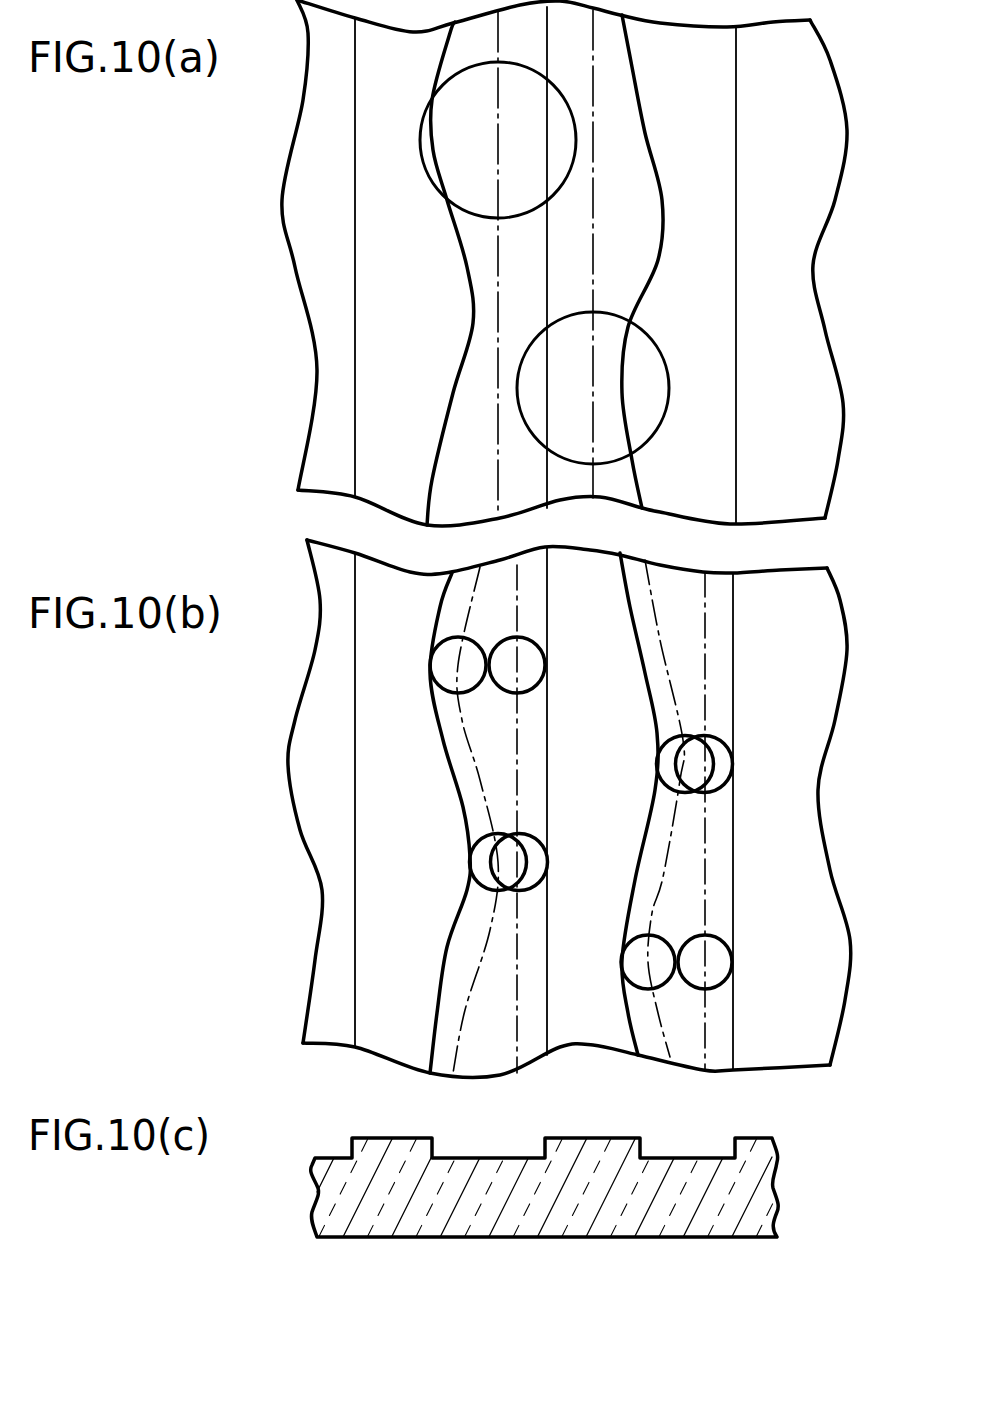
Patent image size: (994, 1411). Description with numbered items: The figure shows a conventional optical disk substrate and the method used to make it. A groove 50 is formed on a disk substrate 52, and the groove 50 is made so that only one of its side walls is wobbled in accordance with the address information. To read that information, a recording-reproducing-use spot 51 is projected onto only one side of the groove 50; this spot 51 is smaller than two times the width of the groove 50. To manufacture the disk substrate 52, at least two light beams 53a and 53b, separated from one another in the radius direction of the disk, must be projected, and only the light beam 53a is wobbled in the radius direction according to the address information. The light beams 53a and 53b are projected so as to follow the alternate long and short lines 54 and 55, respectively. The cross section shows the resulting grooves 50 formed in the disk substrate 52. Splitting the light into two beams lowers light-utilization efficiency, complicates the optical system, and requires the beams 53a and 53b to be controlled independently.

In FIG. 10A, the groove 50 is at (723, 130).
In FIG. 10B, the groove 50 is at (513, 632).
In FIG. 10C, the groove 50 is at (490, 1157).
In FIG. 10A, the recording-reproducing-use spot 51 is at (420, 147).
In FIG. 10C, the disk substrate 52 is at (778, 1185).
In FIG. 10B, the light beam 53a is at (687, 738).
In FIG. 10B, the light beam 53b is at (725, 740).
In FIG. 10B, the alternate long and short line 54 is at (663, 878).
In FIG. 10B, the alternate long and short line 55 is at (705, 897).